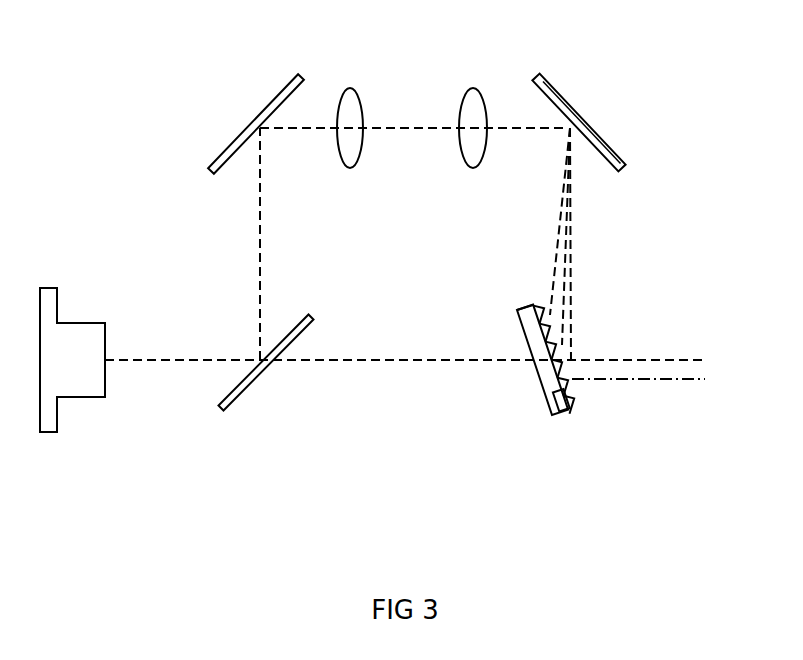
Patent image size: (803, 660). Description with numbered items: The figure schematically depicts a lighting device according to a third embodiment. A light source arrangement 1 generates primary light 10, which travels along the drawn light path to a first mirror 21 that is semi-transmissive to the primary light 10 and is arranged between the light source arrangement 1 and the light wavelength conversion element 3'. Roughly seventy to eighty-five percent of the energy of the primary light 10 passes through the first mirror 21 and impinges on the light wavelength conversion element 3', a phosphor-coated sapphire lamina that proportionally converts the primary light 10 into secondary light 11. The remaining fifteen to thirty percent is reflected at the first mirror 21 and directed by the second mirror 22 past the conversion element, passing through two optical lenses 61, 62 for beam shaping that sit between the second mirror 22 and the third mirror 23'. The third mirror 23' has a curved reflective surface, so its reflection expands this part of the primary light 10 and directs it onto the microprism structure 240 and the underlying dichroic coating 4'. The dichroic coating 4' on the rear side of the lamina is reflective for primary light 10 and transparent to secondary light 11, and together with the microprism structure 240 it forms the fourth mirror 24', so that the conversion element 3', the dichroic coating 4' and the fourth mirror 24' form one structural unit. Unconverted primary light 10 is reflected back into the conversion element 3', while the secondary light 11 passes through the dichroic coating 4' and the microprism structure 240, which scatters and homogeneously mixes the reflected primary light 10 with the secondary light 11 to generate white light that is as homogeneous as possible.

The light source arrangement 1 is at (77, 390).
The primary light 10 is at (413, 128).
The first mirror 21 is at (239, 392).
The second mirror 22 is at (287, 85).
The third mirror 23' is at (582, 95).
The fourth mirror 24' is at (500, 278).
The light wavelength conversion element 3' is at (521, 381).
The dichroic coating 4' is at (568, 445).
The microprism structure 240 is at (575, 398).
The secondary light 11 is at (680, 382).
The optical lens 61 is at (350, 102).
The optical lens 62 is at (473, 102).